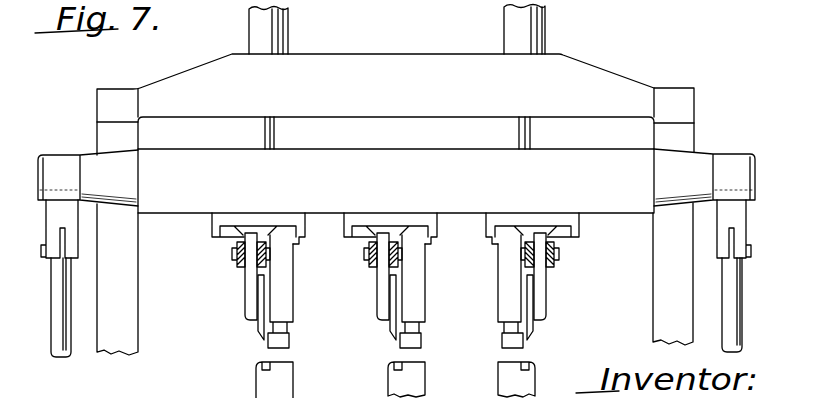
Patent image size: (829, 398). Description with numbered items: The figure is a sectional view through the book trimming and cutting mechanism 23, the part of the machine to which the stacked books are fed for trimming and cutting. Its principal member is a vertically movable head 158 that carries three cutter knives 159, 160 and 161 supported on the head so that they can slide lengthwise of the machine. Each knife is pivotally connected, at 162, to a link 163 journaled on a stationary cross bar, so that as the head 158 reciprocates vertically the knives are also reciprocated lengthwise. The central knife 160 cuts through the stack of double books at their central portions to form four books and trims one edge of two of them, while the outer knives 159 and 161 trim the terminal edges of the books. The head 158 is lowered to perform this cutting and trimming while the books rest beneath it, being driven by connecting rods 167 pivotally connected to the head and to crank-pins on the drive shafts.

The book trimming and cutting mechanism 23 is at (75, 116).
The vertically movable head 158 is at (396, 181).
The cutter knife 159 is at (250, 330).
The central knife 160 is at (382, 328).
The cutter knife 161 is at (522, 333).
The pivotal connection 162 is at (228, 252).
The link 163 is at (232, 268).
The connecting rod 167 is at (50, 323).